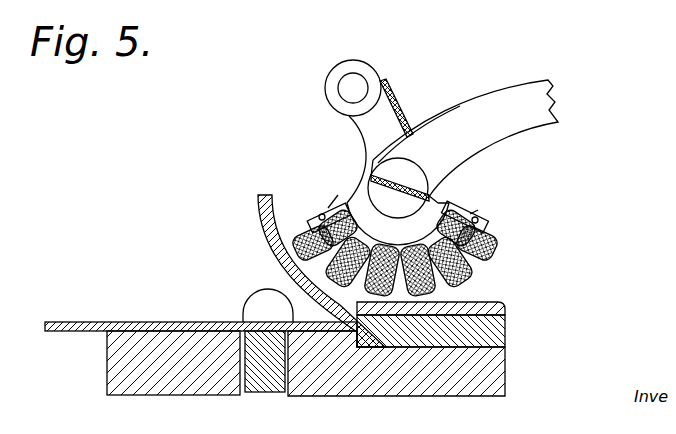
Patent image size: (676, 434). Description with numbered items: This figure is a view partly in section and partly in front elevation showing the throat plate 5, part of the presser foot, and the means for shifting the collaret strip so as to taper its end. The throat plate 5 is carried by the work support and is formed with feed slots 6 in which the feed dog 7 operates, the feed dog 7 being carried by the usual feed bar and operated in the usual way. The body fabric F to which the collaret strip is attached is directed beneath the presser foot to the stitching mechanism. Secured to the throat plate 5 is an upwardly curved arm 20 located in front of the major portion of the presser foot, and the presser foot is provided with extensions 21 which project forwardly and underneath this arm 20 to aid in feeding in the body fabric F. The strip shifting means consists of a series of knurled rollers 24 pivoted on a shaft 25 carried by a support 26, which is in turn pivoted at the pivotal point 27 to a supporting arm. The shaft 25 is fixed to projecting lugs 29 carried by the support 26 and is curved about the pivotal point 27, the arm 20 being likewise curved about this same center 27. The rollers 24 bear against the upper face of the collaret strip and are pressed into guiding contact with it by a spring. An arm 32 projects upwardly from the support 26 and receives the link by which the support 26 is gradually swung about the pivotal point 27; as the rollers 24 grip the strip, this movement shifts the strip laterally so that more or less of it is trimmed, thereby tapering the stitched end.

The body fabric F is at (141, 323).
The throat plate 5 is at (465, 388).
The feed slots 6 is at (505, 313).
The feed dog 7 is at (270, 392).
The upwardly curved arm 20 is at (258, 215).
The extensions 21 is at (267, 303).
The rollers 24 is at (467, 276).
The shaft 25 is at (478, 210).
The support 26 is at (437, 203).
The pivotal point 27 is at (408, 177).
The projecting lugs 29 is at (347, 197).
The arm 32 is at (368, 75).